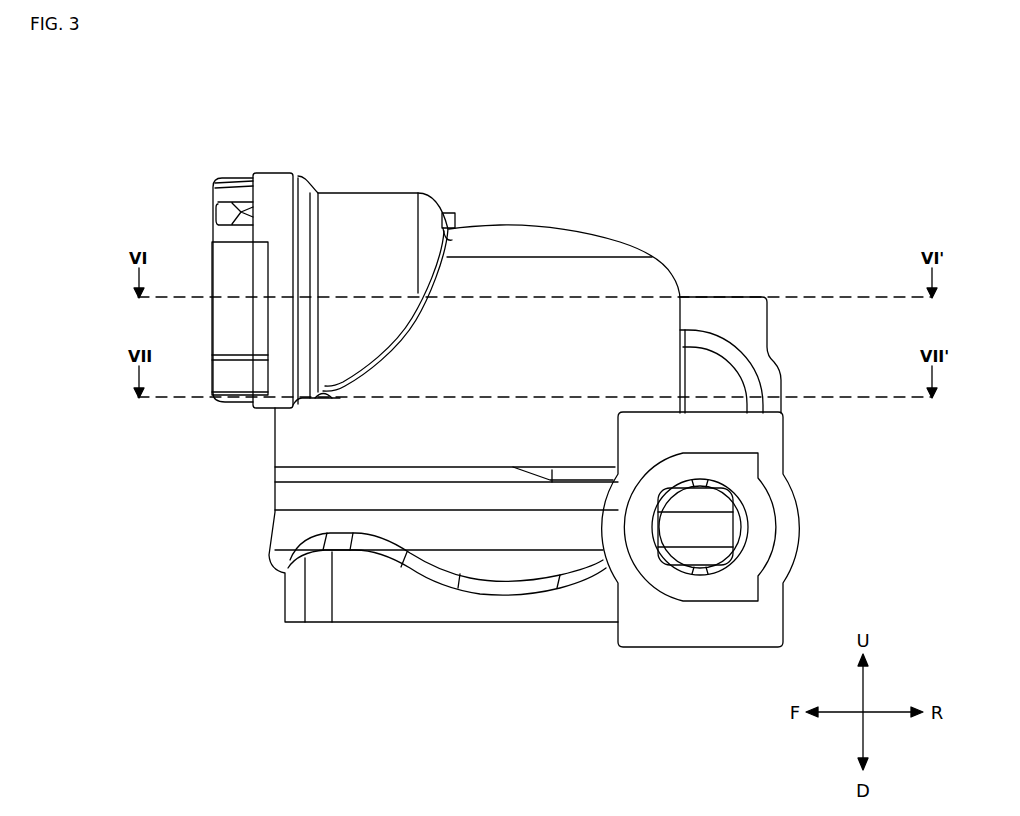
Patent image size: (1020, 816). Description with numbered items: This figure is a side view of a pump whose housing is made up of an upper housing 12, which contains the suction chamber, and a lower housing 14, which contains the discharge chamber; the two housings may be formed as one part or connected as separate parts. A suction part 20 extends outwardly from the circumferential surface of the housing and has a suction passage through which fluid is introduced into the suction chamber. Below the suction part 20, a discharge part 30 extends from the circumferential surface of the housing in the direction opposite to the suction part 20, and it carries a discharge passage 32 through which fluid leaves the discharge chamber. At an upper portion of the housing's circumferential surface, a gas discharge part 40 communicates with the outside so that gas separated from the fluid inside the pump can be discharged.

The upper housing 12 is at (557, 278).
The lower housing 14 is at (300, 496).
The suction part 20 is at (731, 310).
The discharge part 30 is at (772, 450).
The discharge passage 32 is at (703, 529).
The gas discharge part 40 is at (374, 228).